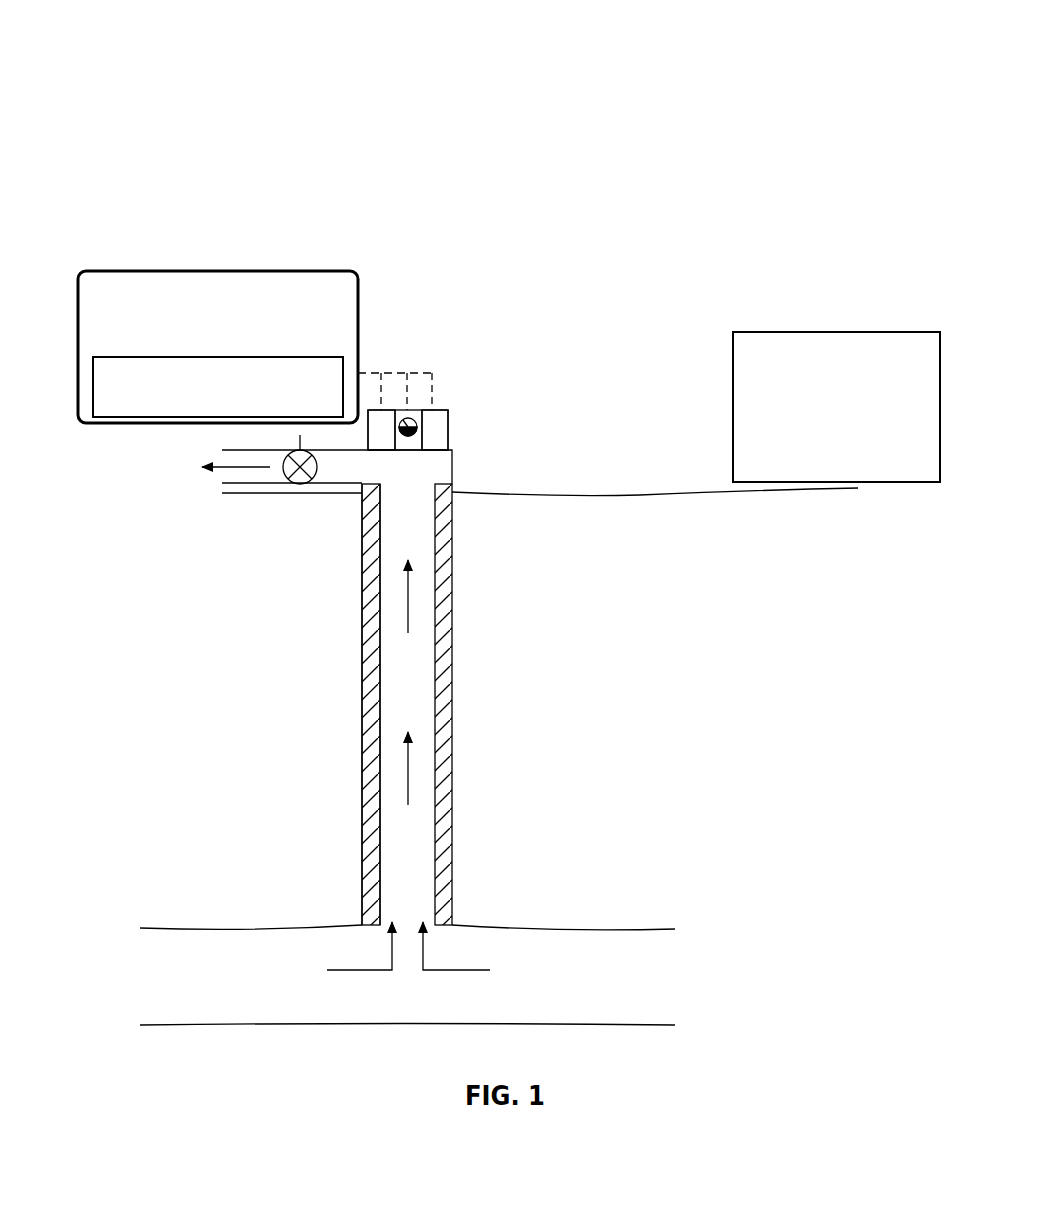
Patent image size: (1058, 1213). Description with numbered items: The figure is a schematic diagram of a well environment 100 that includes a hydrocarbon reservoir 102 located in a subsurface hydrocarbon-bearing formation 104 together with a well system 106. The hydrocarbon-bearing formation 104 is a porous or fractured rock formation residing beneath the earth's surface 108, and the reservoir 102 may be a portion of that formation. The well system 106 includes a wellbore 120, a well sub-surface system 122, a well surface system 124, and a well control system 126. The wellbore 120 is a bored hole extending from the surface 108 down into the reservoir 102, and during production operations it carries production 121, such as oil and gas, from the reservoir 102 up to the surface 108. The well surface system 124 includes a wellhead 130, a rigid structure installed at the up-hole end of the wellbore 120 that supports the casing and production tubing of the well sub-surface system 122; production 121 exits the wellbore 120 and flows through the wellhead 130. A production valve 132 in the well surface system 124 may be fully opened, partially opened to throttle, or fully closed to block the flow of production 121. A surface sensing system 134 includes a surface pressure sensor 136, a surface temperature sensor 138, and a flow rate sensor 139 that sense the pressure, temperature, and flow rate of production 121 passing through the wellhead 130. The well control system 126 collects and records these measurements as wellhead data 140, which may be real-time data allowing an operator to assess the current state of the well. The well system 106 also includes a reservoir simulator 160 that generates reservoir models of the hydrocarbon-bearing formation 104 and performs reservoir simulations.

The well environment 100 is at (516, 75).
The hydrocarbon reservoir 102 is at (600, 1005).
The hydrocarbon-bearing formation 104 is at (638, 825).
The well system 106 is at (180, 236).
The surface 108 is at (650, 500).
The wellbore 120 is at (455, 577).
The production 121 is at (140, 502).
The well sub-surface system 122 is at (345, 743).
The well surface system 124 is at (608, 198).
The well control system 126 is at (143, 271).
The wellhead 130 is at (453, 484).
The production valve 132 is at (300, 484).
The surface sensing system 134 is at (452, 440).
The surface pressure sensor 136 is at (407, 410).
The surface temperature sensor 138 is at (413, 410).
The flow rate sensor 139 is at (383, 410).
The wellhead data 140 is at (165, 357).
The reservoir simulator 160 is at (868, 332).